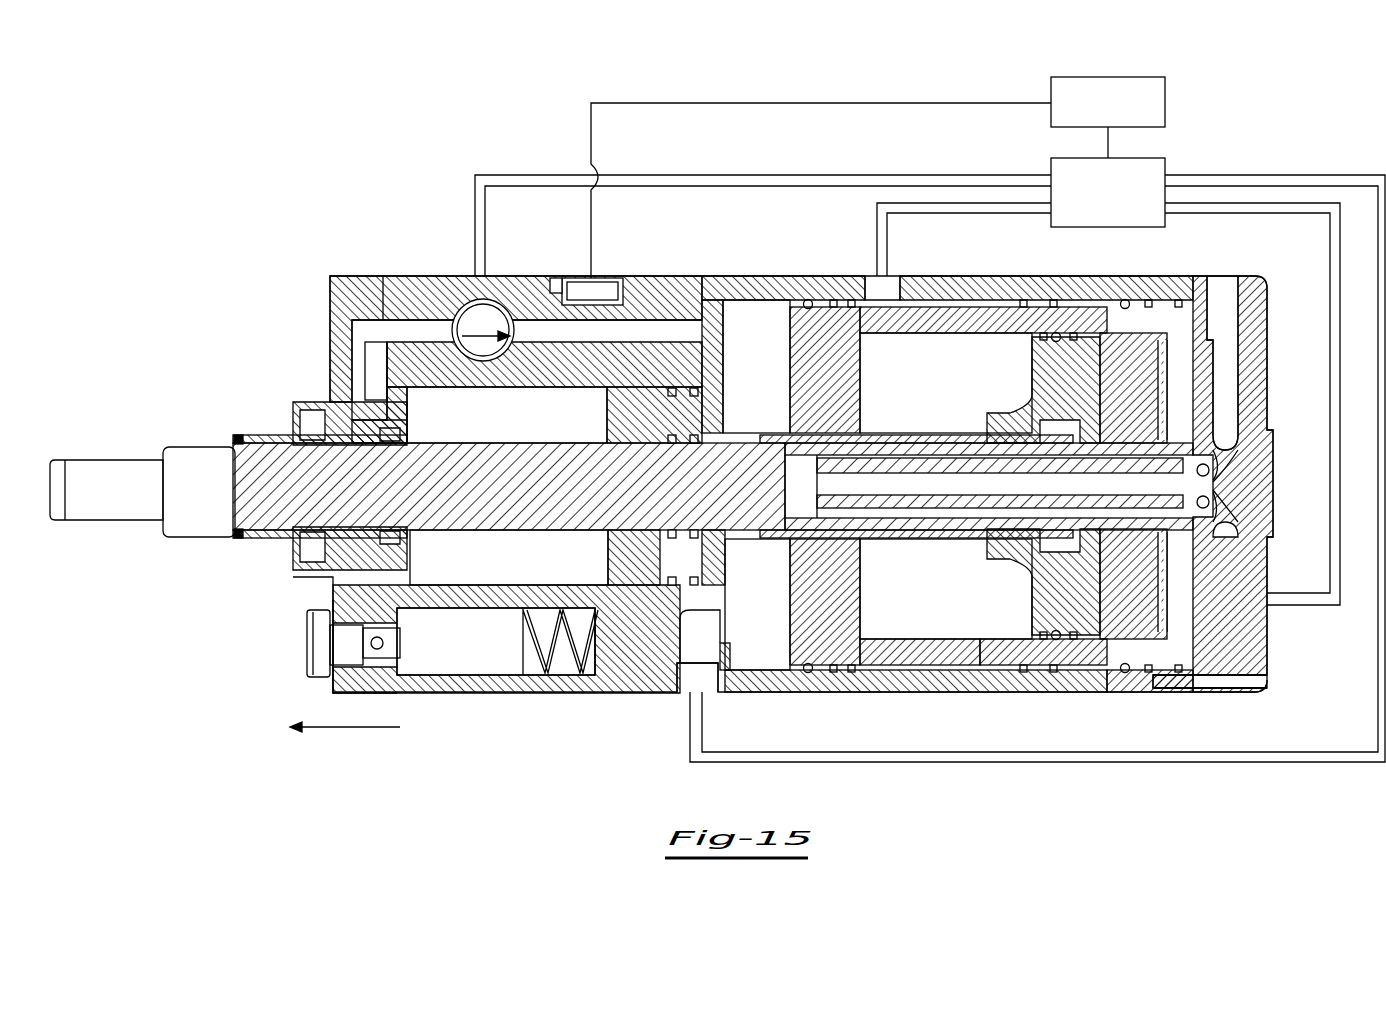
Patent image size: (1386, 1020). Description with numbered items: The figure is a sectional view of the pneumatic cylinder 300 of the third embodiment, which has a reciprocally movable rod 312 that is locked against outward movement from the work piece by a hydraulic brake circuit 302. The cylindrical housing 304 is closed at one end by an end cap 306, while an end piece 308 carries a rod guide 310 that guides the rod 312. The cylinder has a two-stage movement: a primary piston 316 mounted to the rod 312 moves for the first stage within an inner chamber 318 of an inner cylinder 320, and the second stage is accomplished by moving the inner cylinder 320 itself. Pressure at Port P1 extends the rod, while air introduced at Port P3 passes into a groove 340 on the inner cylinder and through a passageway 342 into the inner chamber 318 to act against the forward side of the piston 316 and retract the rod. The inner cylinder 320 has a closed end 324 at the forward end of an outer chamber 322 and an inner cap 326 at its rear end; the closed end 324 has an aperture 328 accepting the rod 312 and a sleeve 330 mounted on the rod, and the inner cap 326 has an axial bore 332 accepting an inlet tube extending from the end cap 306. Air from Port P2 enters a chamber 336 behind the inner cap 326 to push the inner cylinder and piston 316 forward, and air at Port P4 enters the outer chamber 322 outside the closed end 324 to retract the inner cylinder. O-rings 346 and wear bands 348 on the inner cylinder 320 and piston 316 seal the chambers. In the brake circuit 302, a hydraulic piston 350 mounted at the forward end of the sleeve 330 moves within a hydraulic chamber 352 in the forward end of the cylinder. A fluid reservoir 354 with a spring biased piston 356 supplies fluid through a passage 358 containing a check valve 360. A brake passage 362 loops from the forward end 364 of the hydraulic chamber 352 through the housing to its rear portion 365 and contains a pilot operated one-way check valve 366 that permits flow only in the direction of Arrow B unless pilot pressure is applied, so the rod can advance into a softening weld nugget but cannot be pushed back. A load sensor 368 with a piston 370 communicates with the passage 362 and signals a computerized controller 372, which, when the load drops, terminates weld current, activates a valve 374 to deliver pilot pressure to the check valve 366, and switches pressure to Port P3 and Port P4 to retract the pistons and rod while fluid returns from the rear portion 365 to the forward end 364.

The pneumatic cylinder 300 is at (250, 242).
The hydraulic brake circuit 302 is at (668, 262).
The cylindrical housing 304 is at (545, 694).
The end cap 306 is at (345, 592).
The end piece 308 is at (1270, 660).
The rod guide 310 is at (275, 432).
The rod 312 is at (190, 450).
The primary piston 316 is at (1028, 588).
The inner chamber 318 is at (940, 640).
The inner cylinder 320 is at (1000, 658).
The outer chamber 322 is at (760, 652).
The closed end 324 is at (822, 305).
The inner cap 326 is at (1120, 668).
The aperture 328 is at (853, 420).
The sleeve 330 is at (893, 430).
The axial bore 332 is at (992, 482).
The chamber 336 is at (1166, 590).
The groove 340 is at (985, 305).
The passageway 342 is at (880, 330).
The O-rings 346 is at (1130, 300).
The wear bands 348 is at (1092, 305).
The hydraulic piston 350 is at (600, 415).
The hydraulic chamber 352 is at (498, 562).
The fluid reservoir 354 is at (440, 680).
The spring biased piston 356 is at (540, 690).
The passage 358 is at (400, 620).
The check valve 360 is at (302, 655).
The brake passage 362 is at (396, 330).
The forward end of hydraulic chamber 364 is at (412, 408).
The rear portion of hydraulic chamber 365 is at (720, 386).
The pilot operated one-way check valve 366 is at (447, 305).
The load sensor 368 is at (582, 292).
The piston 370 is at (556, 278).
The computerized controller 372 is at (878, 177).
The valve 374 is at (930, 444).
The Port P1 is at (1226, 290).
The Port P2 is at (1267, 600).
The Port P3 is at (889, 292).
The Port P4 is at (690, 694).